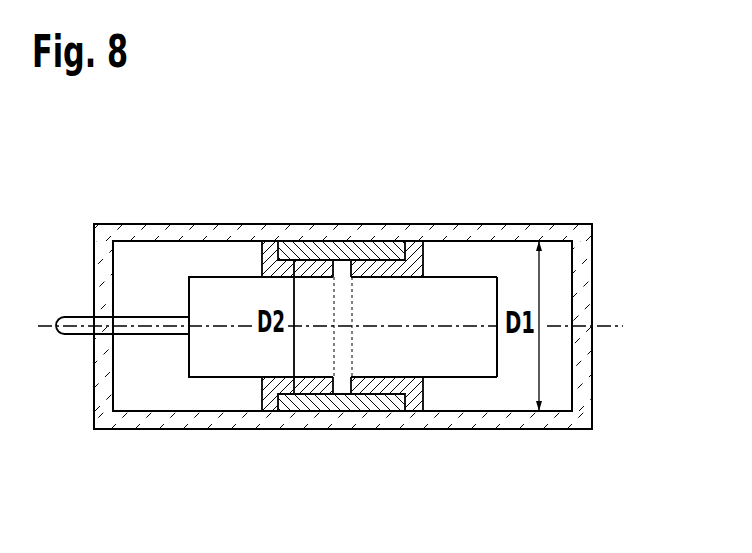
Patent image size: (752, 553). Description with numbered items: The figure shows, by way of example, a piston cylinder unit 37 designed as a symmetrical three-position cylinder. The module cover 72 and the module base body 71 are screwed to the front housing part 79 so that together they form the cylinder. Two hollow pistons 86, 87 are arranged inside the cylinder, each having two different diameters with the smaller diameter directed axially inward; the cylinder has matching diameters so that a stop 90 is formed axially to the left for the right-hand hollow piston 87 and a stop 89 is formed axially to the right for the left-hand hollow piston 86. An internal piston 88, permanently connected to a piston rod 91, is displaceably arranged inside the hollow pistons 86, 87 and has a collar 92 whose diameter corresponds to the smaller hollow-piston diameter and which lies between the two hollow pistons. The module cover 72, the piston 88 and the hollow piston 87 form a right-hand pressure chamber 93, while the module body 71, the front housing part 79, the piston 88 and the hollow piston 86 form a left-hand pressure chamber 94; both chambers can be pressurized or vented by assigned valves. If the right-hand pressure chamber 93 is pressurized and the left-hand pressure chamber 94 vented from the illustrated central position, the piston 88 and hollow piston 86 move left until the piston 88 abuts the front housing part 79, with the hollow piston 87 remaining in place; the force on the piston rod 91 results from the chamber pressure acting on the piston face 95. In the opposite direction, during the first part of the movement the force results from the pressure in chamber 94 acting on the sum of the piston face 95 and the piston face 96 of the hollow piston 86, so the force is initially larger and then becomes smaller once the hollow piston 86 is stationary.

The piston cylinder unit 37 is at (619, 214).
The module base body 71 is at (185, 233).
The module cover 72 is at (542, 227).
The front housing part 79 is at (105, 232).
The left-hand pressure chamber 94 is at (167, 398).
The internal piston 88 is at (223, 290).
The piston rod 91 is at (73, 332).
The collar 92 is at (342, 270).
The piston face of the hollow piston 96 is at (426, 262).
The left-hand hollow piston 86 is at (256, 398).
The right-hand hollow piston 87 is at (423, 388).
The stop 89 is at (292, 410).
The stop 90 is at (402, 410).
The right-hand pressure chamber 93 is at (560, 293).
The piston face 95 is at (505, 362).